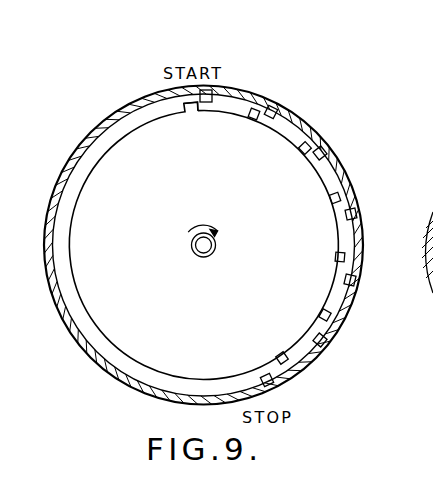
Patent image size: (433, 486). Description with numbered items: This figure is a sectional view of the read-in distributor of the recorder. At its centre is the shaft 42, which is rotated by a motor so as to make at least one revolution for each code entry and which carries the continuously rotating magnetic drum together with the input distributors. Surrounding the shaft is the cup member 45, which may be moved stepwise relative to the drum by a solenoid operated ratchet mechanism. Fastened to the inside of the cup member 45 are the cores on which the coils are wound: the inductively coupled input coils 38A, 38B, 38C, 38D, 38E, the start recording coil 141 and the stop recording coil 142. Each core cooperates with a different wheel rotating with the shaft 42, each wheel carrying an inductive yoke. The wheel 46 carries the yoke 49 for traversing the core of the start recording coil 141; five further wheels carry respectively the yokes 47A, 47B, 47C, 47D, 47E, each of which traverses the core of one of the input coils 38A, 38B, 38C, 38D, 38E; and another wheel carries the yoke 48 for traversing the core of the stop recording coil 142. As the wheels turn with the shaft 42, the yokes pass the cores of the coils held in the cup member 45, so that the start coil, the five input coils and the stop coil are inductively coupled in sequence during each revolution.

The cup member 45 is at (117, 112).
The wheel 46 is at (70, 246).
The yoke 49 is at (190, 115).
The shaft 42 is at (192, 250).
The start recording coil 141 is at (213, 92).
The stop recording coil 142 is at (274, 386).
The yoke 47A is at (254, 108).
The yoke 47B is at (312, 151).
The yoke 47C is at (343, 206).
The yoke 47D is at (346, 256).
The yoke 47E is at (333, 318).
The input coil 38A is at (277, 113).
The input coil 38B is at (327, 160).
The input coil 38C is at (358, 215).
The input coil 38D is at (357, 281).
The input coil 38E is at (328, 344).
The yoke 48 is at (288, 362).